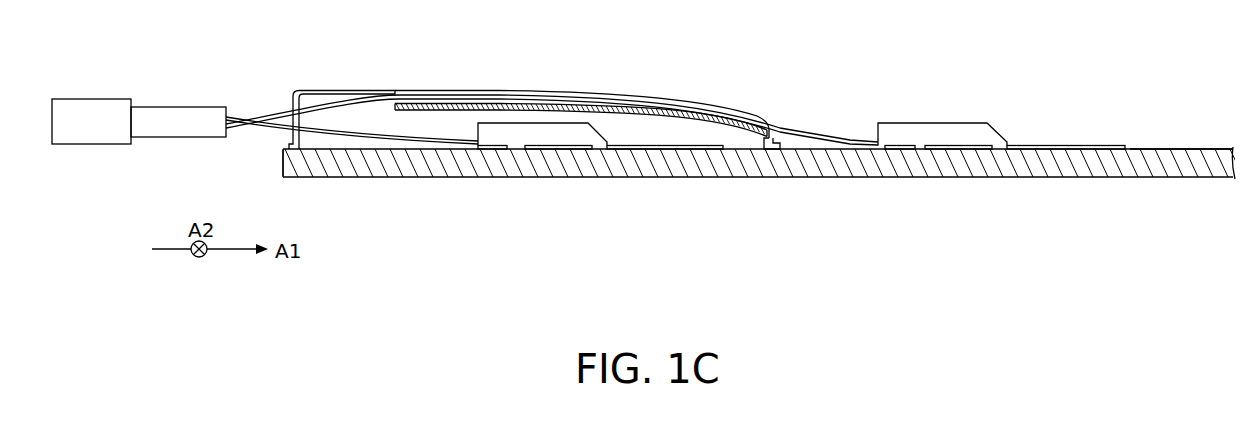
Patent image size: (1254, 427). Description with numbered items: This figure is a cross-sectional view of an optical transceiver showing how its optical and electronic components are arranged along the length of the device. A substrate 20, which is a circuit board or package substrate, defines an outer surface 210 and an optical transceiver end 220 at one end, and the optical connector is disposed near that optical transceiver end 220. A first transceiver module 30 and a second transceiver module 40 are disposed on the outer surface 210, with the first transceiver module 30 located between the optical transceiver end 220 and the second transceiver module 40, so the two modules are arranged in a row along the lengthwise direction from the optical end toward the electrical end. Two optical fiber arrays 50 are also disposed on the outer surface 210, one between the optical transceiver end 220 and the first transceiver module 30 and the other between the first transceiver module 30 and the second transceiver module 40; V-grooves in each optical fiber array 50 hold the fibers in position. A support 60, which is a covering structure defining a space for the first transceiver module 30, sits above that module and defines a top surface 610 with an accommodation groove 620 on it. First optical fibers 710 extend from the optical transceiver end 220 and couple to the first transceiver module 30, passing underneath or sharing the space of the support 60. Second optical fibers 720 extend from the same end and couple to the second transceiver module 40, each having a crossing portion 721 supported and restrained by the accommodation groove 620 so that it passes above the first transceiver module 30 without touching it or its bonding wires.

The substrate 20 is at (1099, 177).
The outer surface 210 is at (1180, 149).
The optical transceiver end 220 is at (283, 163).
The first transceiver module 30 is at (676, 149).
The second transceiver module 40 is at (1077, 145).
The optical fiber array 50 is at (552, 135).
The support 60 is at (533, 77).
The top surface 610 is at (373, 90).
The accommodation groove 620 is at (494, 96).
The first optical fiber 710 is at (347, 134).
The second optical fiber 720 is at (813, 126).
The crossing portion 721 is at (650, 101).